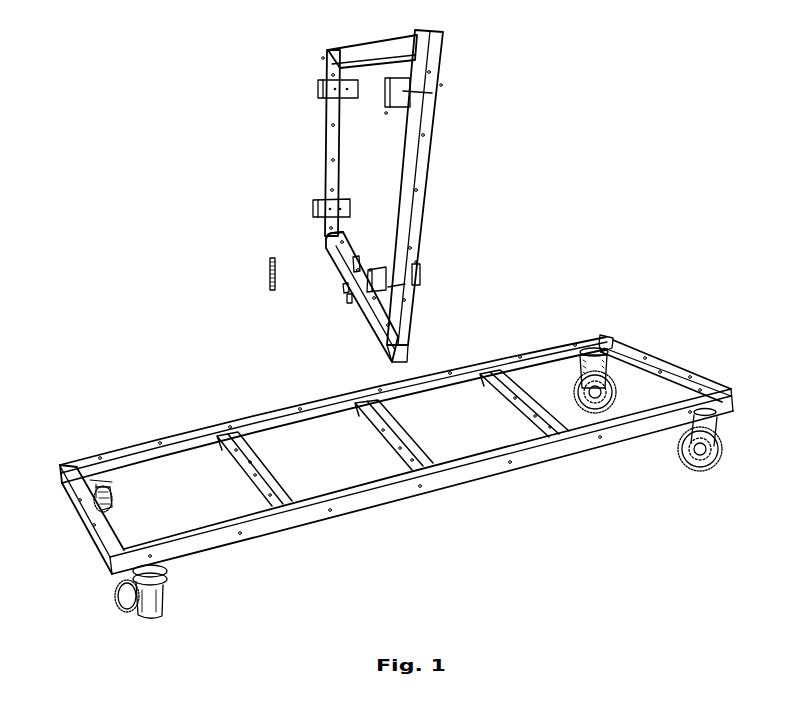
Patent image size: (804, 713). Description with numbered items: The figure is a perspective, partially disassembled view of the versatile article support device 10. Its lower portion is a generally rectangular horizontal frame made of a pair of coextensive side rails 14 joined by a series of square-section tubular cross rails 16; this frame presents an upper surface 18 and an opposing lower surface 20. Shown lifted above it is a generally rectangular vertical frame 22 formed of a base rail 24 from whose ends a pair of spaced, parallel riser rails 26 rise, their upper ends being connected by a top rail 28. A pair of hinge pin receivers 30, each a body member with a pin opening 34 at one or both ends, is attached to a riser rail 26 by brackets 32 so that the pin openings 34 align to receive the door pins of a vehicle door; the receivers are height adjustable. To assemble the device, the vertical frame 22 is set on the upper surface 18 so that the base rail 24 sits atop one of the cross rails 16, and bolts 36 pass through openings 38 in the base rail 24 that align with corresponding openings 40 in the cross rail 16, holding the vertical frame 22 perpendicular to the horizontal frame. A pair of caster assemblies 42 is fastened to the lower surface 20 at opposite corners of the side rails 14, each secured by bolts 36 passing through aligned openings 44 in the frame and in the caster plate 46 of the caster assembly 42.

The versatile article support device 10 is at (371, 475).
The side rails 14 is at (275, 410).
The cross rails 16 is at (643, 350).
The upper surface 18 is at (619, 410).
The lower surface 20 is at (582, 450).
The vertical frame 22 is at (354, 183).
The base rail 24 is at (348, 286).
The riser rails 26 is at (327, 127).
The top rail 28 is at (374, 44).
The hinge pin receivers 30 is at (312, 92).
The brackets 32 is at (431, 95).
The pin opening 34 is at (323, 80).
The bolts 36 is at (264, 278).
The openings 38 is at (306, 228).
The openings 40 is at (362, 398).
The caster assemblies 42 is at (703, 470).
The openings 44 is at (105, 452).
The caster plate 46 is at (115, 484).